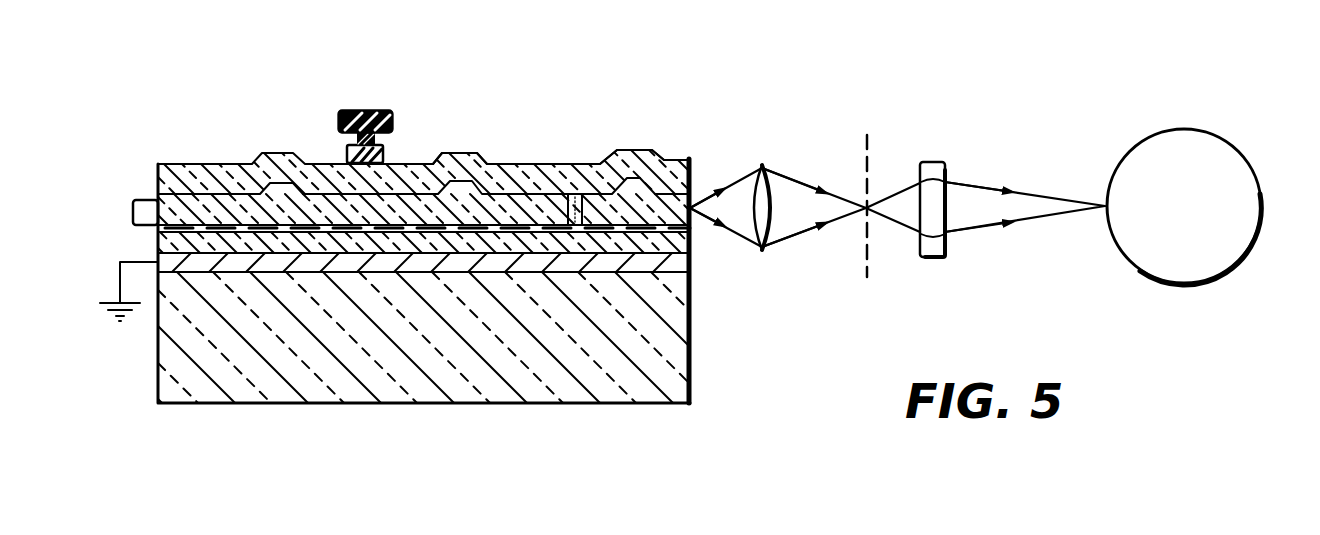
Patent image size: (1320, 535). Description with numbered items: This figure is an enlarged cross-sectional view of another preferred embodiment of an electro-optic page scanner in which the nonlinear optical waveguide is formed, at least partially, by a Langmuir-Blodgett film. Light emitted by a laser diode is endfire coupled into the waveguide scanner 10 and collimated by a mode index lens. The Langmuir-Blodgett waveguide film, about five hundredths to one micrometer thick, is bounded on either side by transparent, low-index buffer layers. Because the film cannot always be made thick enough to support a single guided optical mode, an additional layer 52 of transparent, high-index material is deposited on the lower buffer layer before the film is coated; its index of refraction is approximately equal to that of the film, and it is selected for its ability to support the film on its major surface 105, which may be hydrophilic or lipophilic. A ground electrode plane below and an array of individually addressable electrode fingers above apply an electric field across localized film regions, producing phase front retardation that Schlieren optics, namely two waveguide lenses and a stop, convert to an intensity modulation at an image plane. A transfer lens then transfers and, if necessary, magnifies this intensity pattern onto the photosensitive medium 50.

The waveguide scanner 10 is at (772, 20).
The major surface 105 is at (202, 224).
The additional layer 52 is at (156, 227).
The photosensitive medium 50 is at (1262, 217).